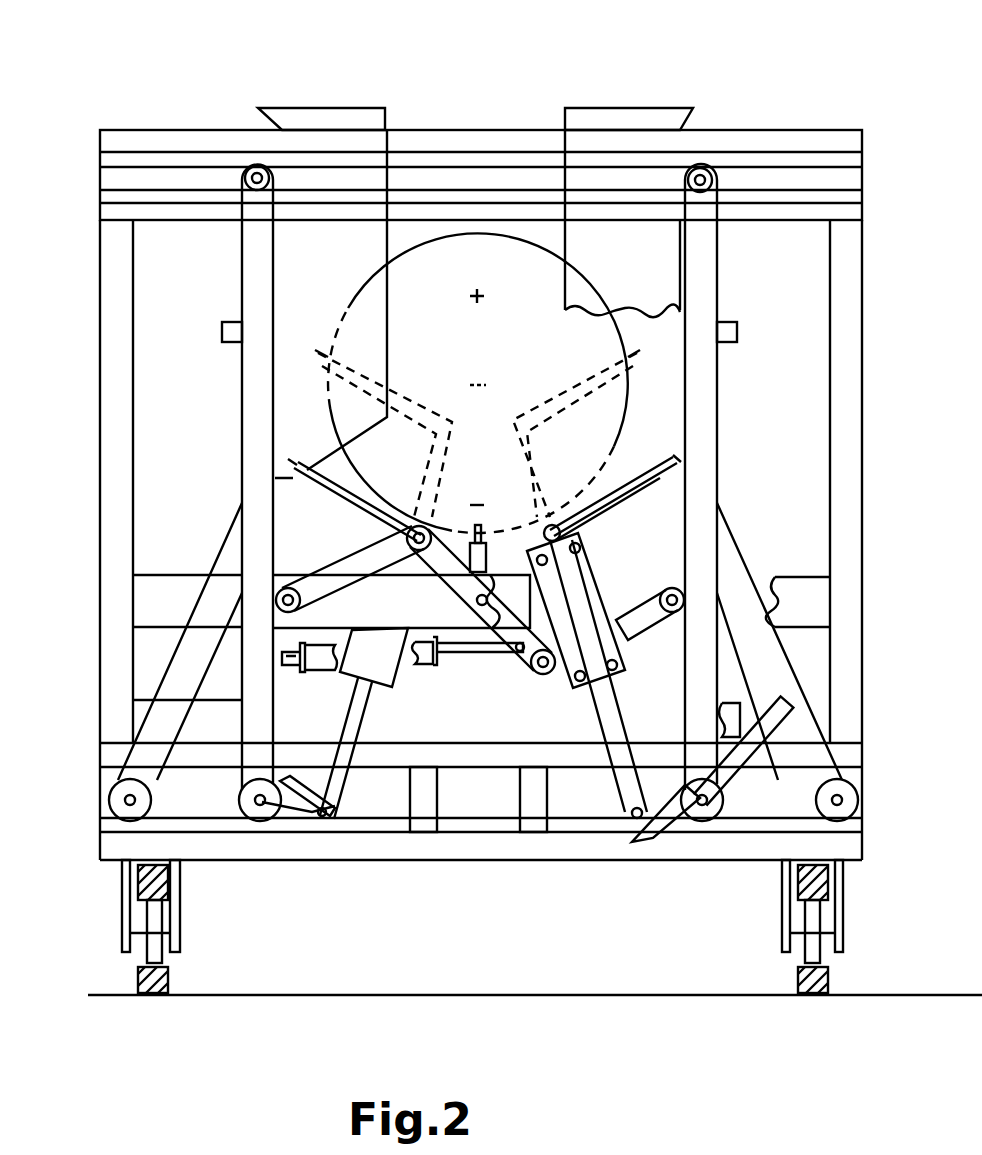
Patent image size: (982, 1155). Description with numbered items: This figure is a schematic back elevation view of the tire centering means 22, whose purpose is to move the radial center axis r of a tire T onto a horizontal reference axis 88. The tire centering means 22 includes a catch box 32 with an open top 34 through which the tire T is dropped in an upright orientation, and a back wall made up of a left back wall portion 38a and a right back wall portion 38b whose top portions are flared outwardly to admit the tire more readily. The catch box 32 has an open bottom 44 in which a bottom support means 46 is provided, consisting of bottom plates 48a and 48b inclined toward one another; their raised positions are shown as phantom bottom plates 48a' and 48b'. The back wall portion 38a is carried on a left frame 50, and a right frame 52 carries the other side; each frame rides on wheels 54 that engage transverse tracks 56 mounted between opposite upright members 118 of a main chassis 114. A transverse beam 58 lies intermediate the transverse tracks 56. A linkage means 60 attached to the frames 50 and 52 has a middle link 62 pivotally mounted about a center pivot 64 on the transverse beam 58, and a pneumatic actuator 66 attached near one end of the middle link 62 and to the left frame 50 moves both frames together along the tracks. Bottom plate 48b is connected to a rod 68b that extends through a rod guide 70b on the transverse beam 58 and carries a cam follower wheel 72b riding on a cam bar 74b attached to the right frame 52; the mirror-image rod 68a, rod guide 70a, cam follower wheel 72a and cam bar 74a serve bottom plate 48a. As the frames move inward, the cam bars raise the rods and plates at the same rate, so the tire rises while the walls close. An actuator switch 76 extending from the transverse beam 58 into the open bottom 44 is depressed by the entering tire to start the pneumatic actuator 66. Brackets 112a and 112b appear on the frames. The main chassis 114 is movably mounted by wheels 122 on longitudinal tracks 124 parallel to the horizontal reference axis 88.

The tire centering means 22 is at (482, 70).
The catch box 32 is at (612, 105).
The open top 34 is at (425, 105).
The left back wall portion 38a is at (290, 306).
The right back wall portion 38b is at (608, 259).
The open bottom 44 is at (467, 496).
The bottom support means 46 is at (603, 517).
The bottom plate 48a is at (353, 500).
The bottom plate 48b is at (615, 481).
The phantom bottom plate 48a' is at (388, 433).
The phantom bottom plate 48b' is at (576, 426).
The left frame 50 is at (242, 384).
The right frame 52 is at (716, 384).
The wheels 54 is at (250, 172).
The transverse tracks 56 is at (100, 148).
The transverse beam 58 is at (182, 575).
The linkage means 60 is at (352, 565).
The middle link 62 is at (454, 590).
The center pivot 64 is at (499, 557).
The pneumatic actuator 66 is at (428, 665).
The rod 68a is at (368, 704).
The rod 68b is at (602, 704).
The rod guide 70a is at (342, 672).
The rod guide 70b is at (596, 562).
The cam follower wheel 72a is at (340, 808).
The cam follower wheel 72b is at (658, 795).
The cam bar 74a is at (298, 806).
The cam bar 74b is at (666, 840).
The actuator switch 76 is at (483, 526).
The horizontal reference axis 88 is at (480, 296).
The bracket 112a is at (232, 322).
The bracket 112b is at (733, 322).
The main chassis 114 is at (92, 722).
The upright members 118 is at (94, 422).
The wheels 122 is at (180, 945).
The longitudinal tracks 124 is at (180, 882).
The tire T is at (365, 292).
The radial center axis r is at (480, 392).